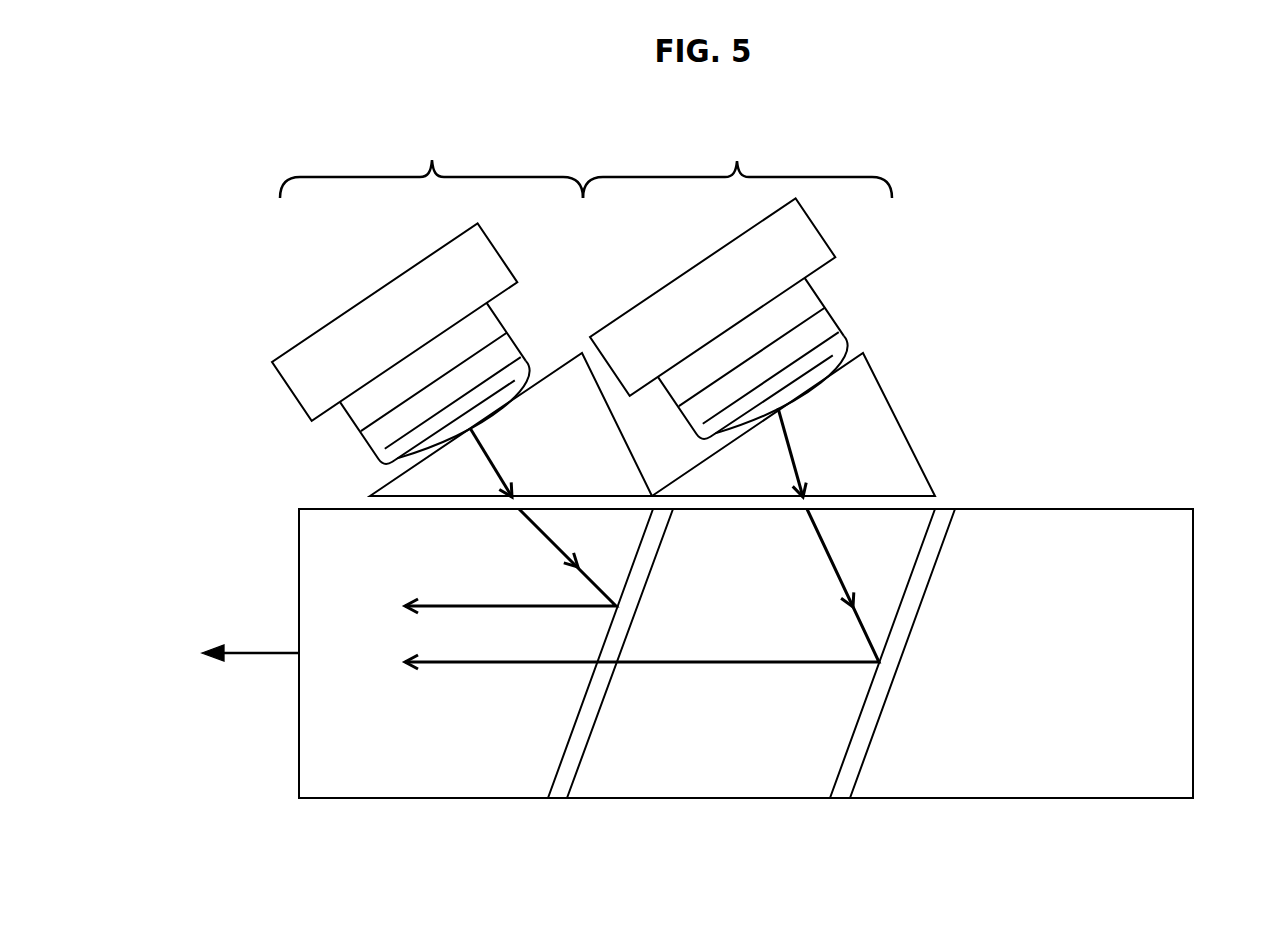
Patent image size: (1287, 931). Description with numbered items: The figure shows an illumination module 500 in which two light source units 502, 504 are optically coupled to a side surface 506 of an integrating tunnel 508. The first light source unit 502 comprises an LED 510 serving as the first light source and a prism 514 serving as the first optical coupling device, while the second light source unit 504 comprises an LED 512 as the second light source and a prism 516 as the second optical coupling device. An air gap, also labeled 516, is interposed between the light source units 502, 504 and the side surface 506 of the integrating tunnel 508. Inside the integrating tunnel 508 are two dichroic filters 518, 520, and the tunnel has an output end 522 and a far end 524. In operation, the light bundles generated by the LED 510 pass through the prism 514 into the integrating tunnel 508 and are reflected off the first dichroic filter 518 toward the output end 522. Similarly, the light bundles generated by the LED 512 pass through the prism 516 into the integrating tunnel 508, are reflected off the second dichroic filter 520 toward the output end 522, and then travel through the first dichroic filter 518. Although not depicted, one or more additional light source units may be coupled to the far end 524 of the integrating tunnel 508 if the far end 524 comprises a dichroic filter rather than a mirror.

The illumination module 500 is at (715, 96).
The first light source unit 502 is at (462, 309).
The second light source unit 504 is at (811, 311).
The side surface 506 is at (1088, 495).
The integrating tunnel 508 is at (757, 786).
The LED 510 is at (485, 278).
The LED 512 is at (792, 247).
The prism 514 is at (511, 425).
The prism 516 is at (1017, 448).
The first dichroic filter 518 is at (583, 727).
The second dichroic filter 520 is at (883, 693).
The output end 522 is at (285, 592).
The far end 524 is at (1210, 681).